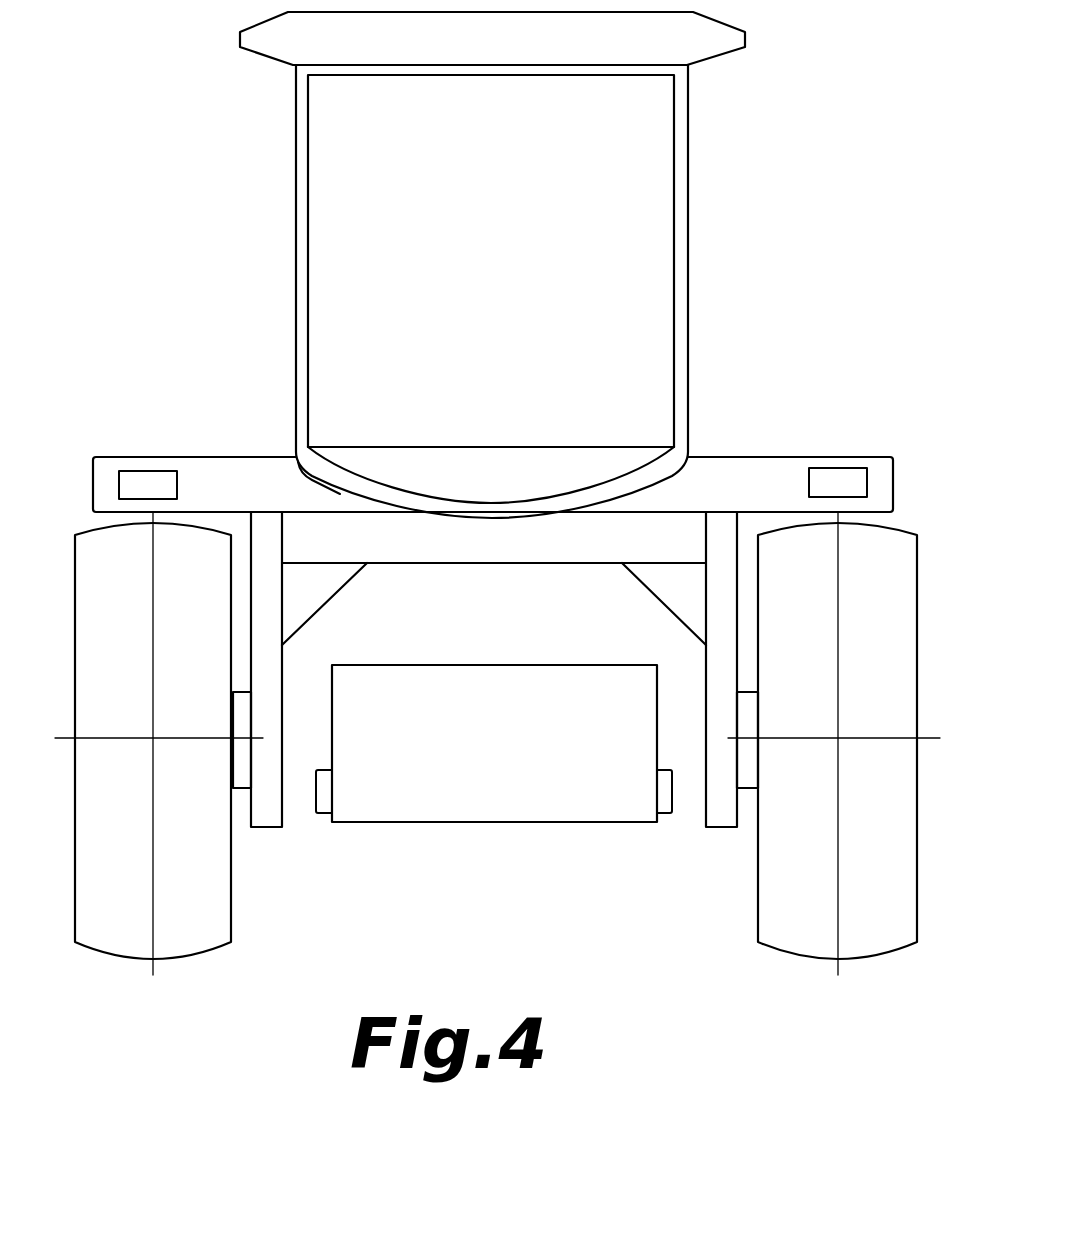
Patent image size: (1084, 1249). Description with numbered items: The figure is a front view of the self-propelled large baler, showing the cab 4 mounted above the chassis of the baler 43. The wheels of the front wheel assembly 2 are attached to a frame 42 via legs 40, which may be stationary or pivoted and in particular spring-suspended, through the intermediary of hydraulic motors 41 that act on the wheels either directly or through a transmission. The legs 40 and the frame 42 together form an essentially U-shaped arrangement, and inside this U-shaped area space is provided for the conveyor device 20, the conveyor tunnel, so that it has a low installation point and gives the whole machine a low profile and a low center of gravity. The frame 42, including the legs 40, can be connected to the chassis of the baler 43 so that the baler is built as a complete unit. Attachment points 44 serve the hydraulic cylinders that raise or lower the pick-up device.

The front wheel assembly 2 is at (256, 890).
The cab 4 is at (490, 273).
The conveyor device 20 is at (555, 822).
The legs 40 is at (272, 820).
The hydraulic motors 41 is at (243, 765).
The frame 42 is at (493, 548).
The chassis of the baler 43 is at (735, 476).
The attachment points for hydraulic cylinders 44 is at (330, 790).